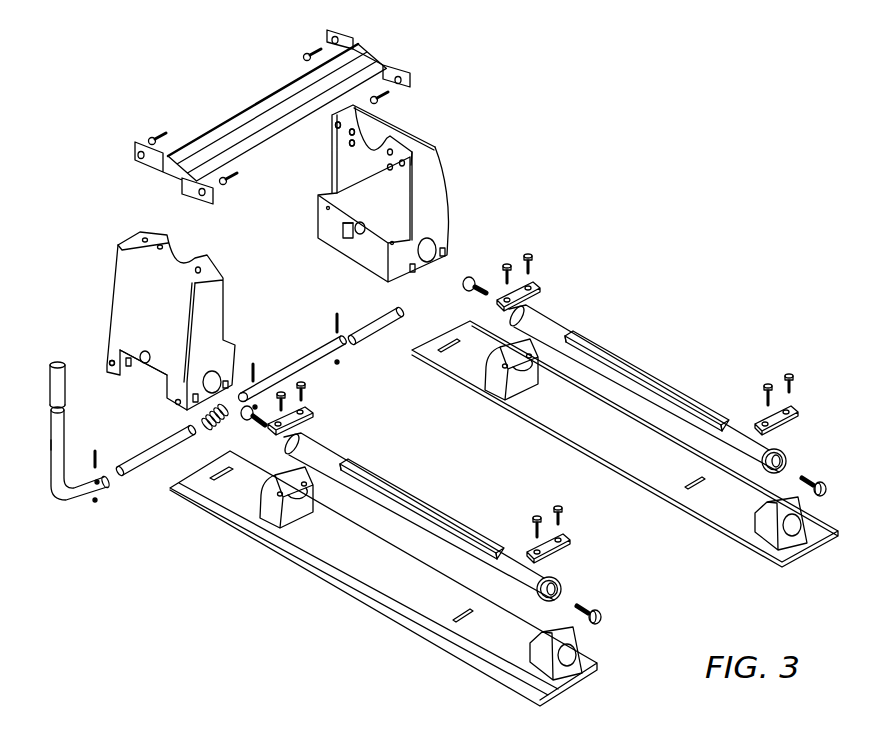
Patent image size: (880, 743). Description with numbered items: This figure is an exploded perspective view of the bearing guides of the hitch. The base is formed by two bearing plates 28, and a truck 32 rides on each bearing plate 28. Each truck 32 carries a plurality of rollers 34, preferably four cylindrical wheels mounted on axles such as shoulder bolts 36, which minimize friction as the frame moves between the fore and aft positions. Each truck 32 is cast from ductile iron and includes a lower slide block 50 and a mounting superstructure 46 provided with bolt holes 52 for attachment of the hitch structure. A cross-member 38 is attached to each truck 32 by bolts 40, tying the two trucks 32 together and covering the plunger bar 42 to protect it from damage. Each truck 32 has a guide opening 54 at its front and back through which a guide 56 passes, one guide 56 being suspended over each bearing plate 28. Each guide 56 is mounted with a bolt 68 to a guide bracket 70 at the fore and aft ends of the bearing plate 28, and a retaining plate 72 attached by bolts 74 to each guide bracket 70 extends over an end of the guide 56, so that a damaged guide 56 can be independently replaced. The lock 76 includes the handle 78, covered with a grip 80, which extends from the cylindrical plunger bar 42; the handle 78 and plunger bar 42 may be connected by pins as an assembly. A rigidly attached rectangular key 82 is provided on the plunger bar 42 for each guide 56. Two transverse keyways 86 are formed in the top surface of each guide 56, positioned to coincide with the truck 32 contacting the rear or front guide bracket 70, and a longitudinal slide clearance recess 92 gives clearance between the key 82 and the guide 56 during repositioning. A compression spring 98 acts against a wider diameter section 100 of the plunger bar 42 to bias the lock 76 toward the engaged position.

The bearing plates 28 is at (353, 567).
The truck 32 is at (456, 219).
The rollers 34 is at (442, 258).
The shoulder bolts 36 is at (110, 366).
The cross-member 38 is at (217, 137).
The bolts 40 is at (302, 50).
The plunger bar 42 is at (370, 323).
The mounting superstructure 46 is at (433, 183).
The lower slide block 50 is at (382, 258).
The bolt holes 52 is at (341, 142).
The guide opening 54 is at (440, 241).
The guide 56 is at (373, 472).
The bolt 68 is at (581, 603).
The guide bracket 70 is at (273, 515).
The retaining plate 72 is at (566, 546).
The bolts 74 is at (558, 506).
The lock 76 is at (148, 513).
The handle 78 is at (53, 462).
The grip 80 is at (52, 385).
The key 82 is at (350, 338).
The keyways 86 is at (343, 464).
The slide clearance recess 92 is at (418, 512).
The compression spring 98 is at (213, 425).
The wider diameter section 100 is at (330, 343).